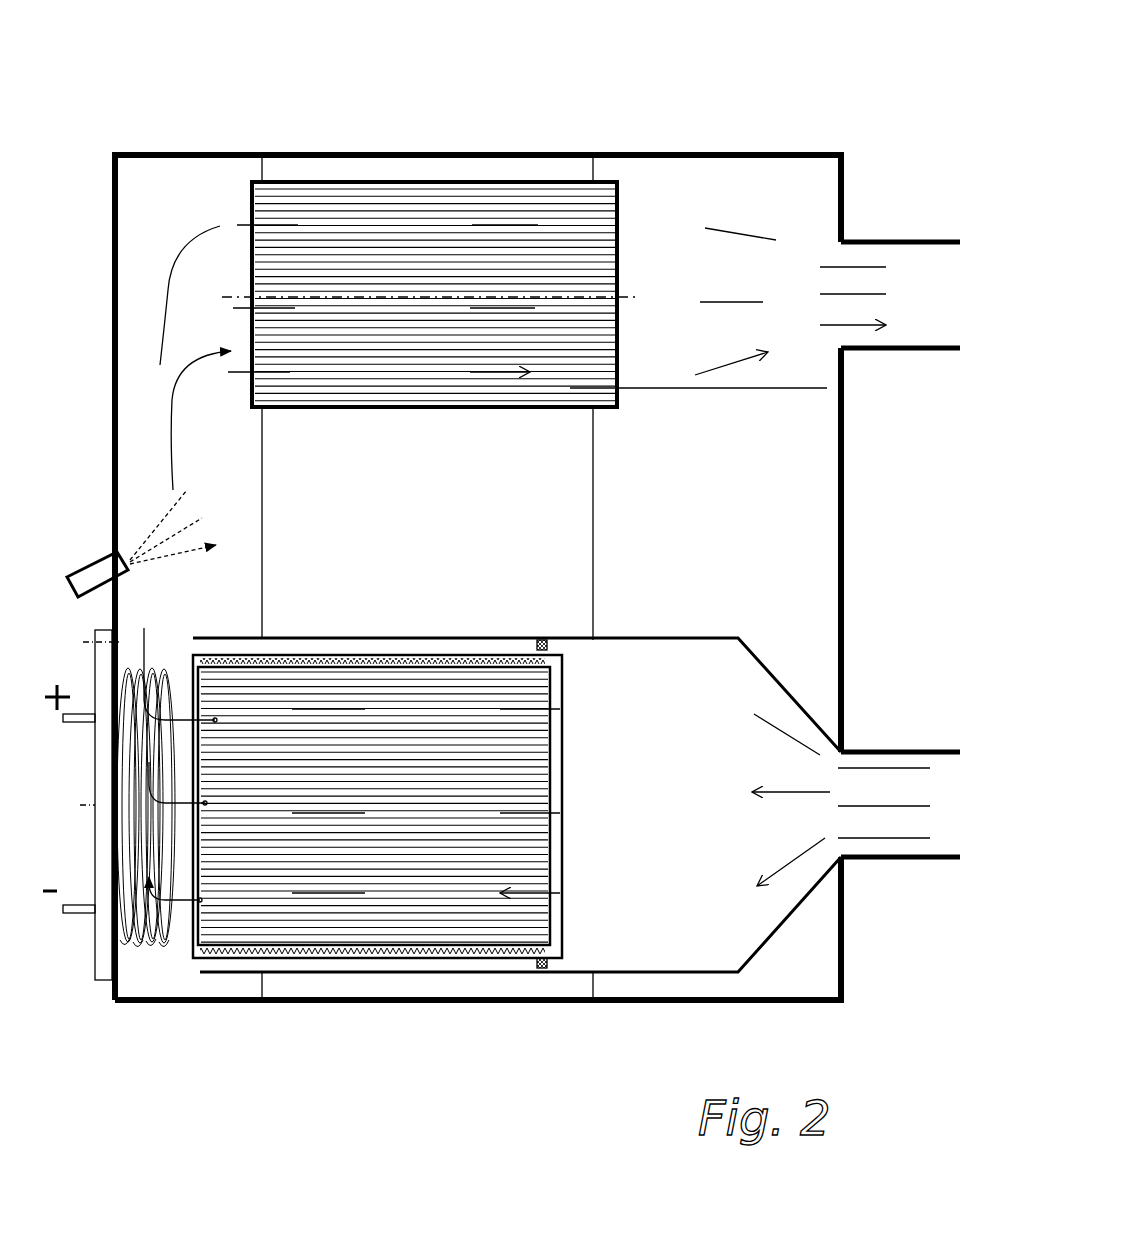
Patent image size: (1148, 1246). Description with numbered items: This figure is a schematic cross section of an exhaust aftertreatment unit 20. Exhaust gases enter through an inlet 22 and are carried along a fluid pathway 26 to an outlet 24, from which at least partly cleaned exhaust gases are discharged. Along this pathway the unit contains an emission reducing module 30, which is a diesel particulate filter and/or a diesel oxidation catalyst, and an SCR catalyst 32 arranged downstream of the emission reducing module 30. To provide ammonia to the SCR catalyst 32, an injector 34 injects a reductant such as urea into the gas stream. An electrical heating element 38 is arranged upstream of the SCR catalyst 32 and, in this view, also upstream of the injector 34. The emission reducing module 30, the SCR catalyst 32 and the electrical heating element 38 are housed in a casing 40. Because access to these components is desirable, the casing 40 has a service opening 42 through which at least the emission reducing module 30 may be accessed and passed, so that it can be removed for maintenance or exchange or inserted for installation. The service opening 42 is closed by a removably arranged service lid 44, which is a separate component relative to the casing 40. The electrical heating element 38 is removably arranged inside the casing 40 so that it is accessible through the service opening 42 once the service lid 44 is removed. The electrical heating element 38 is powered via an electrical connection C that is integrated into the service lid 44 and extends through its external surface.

The exhaust aftertreatment unit 20 is at (668, 92).
The inlet 22 is at (875, 859).
The outlet 24 is at (903, 350).
The fluid pathway 26 is at (688, 672).
The emission reducing module 30 is at (422, 948).
The SCR catalyst 32 is at (392, 182).
The injector 34 is at (88, 555).
The electrical heating element 38 is at (173, 955).
The casing 40 is at (238, 1004).
The service opening 42 is at (119, 957).
The service lid 44 is at (93, 983).
The electrical connection C is at (62, 950).